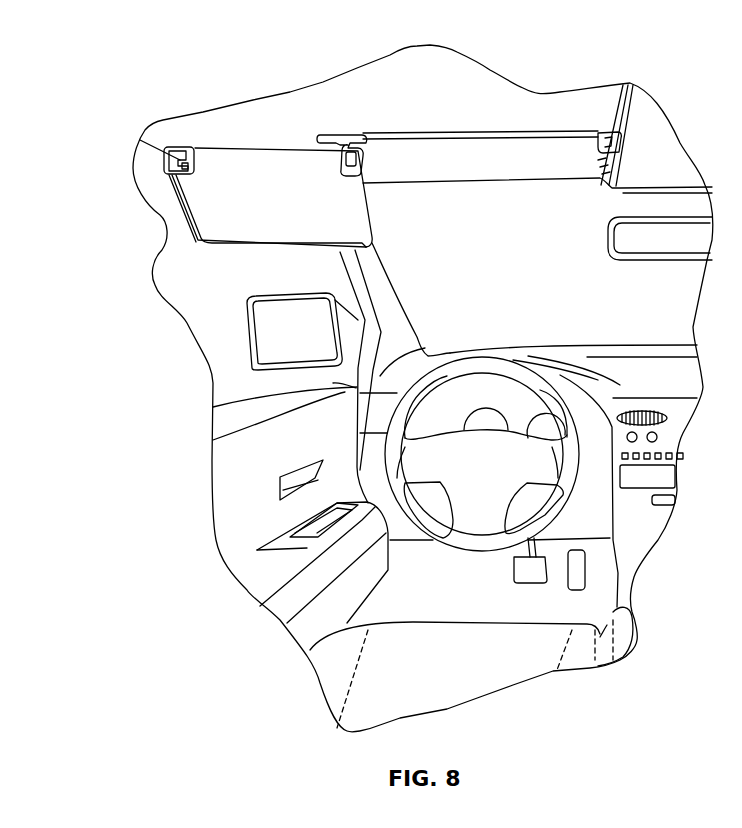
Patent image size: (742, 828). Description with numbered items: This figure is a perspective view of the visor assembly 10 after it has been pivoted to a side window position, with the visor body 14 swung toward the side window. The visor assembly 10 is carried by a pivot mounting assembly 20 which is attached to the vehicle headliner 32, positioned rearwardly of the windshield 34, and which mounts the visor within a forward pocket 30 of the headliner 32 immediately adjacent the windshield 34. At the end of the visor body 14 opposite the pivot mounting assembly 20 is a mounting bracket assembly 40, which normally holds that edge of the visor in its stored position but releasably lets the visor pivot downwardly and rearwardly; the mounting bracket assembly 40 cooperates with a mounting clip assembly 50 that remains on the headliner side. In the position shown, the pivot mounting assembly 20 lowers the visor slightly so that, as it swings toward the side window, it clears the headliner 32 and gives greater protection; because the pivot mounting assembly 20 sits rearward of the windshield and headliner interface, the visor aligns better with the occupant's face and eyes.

The visor assembly 10 is at (240, 130).
The sun visor body 14 is at (276, 207).
The pivot mounting assembly 20 is at (334, 125).
The forward pocket 30 is at (598, 178).
The vehicle headliner 32 is at (438, 108).
The windshield 34 is at (498, 265).
The mounting bracket assembly 40 is at (150, 140).
The mounting clip assembly 50 is at (640, 150).